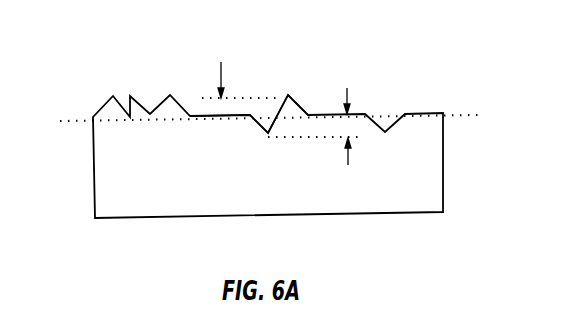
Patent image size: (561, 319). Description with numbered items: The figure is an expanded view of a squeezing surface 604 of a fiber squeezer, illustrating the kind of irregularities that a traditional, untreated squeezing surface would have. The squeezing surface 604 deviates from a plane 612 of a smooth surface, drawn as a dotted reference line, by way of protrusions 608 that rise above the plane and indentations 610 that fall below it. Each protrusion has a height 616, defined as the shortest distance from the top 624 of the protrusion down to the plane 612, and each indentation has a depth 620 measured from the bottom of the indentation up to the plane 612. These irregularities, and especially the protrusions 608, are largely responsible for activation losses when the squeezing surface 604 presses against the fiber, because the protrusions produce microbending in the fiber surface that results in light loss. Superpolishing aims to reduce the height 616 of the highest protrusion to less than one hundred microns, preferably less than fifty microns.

The squeezing surface 604 is at (470, 113).
The protrusions 608 is at (288, 95).
The indentations 610 is at (265, 138).
The plane of a smooth surface 612 is at (207, 118).
The height 616 is at (221, 62).
The depth 620 is at (355, 132).
The top of the protrusion 624 is at (247, 98).